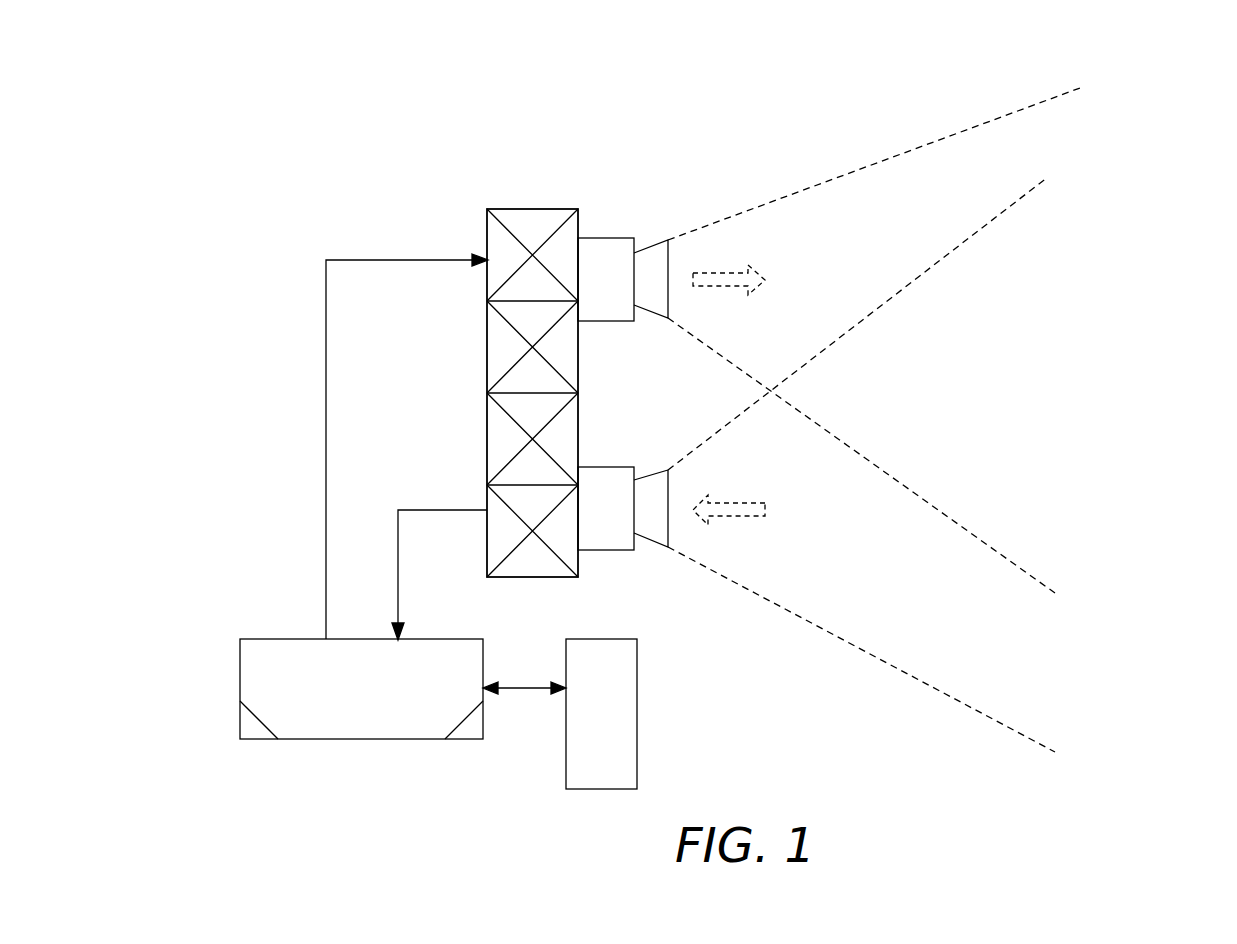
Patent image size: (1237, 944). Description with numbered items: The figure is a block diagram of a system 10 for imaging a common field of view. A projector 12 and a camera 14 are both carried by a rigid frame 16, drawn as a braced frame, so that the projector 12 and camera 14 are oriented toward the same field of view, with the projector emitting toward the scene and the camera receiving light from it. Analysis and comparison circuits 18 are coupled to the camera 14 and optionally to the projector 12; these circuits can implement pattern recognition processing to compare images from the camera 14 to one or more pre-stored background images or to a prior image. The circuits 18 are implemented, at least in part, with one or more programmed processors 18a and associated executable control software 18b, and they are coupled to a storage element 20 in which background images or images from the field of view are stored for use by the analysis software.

The system 10 is at (1151, 88).
The projector 12 is at (605, 322).
The camera 14 is at (605, 551).
The rigid frame 16 is at (487, 320).
The analysis and comparison circuits 18 is at (470, 640).
The programmed processors 18a is at (245, 727).
The executable control software 18b is at (470, 733).
The storage element 20 is at (618, 639).